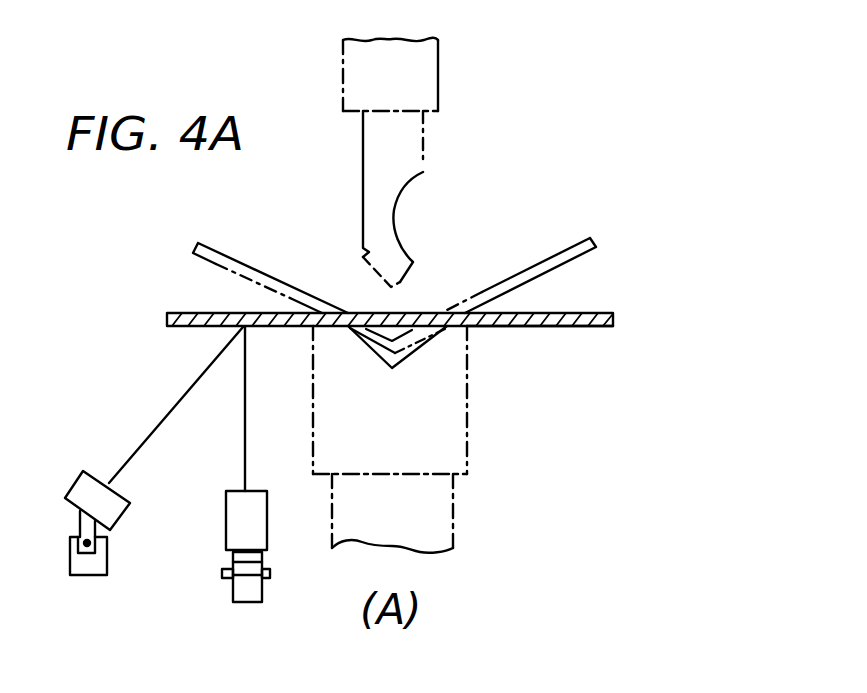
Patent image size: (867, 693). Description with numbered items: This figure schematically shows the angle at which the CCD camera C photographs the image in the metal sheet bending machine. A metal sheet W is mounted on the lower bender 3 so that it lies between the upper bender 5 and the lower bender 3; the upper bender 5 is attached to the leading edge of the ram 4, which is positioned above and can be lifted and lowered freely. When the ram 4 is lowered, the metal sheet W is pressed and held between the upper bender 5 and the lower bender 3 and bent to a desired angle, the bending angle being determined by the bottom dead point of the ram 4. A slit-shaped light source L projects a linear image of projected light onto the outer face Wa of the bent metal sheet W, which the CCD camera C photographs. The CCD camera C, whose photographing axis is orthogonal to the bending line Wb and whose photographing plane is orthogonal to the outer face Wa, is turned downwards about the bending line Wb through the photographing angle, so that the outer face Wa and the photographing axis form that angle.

The ram 4 is at (438, 92).
The upper bender 5 is at (423, 165).
The metal sheet W is at (600, 314).
The outer face Wa is at (578, 327).
The bending line Wb is at (410, 365).
The lower bender 3 is at (448, 447).
The CCD camera C is at (86, 484).
The slit-shaped light source L is at (232, 530).